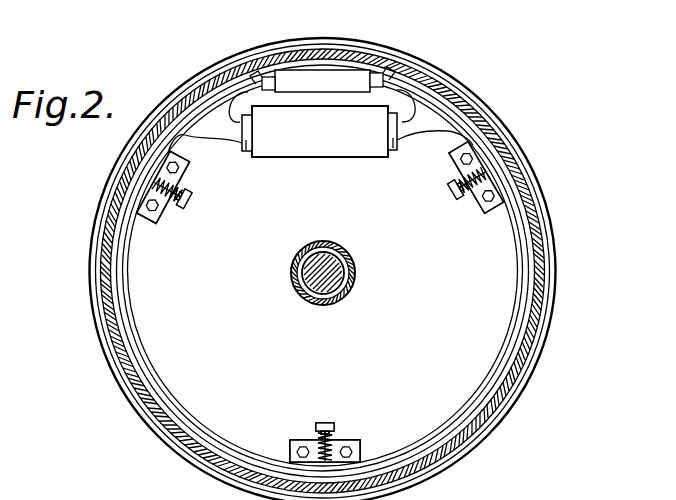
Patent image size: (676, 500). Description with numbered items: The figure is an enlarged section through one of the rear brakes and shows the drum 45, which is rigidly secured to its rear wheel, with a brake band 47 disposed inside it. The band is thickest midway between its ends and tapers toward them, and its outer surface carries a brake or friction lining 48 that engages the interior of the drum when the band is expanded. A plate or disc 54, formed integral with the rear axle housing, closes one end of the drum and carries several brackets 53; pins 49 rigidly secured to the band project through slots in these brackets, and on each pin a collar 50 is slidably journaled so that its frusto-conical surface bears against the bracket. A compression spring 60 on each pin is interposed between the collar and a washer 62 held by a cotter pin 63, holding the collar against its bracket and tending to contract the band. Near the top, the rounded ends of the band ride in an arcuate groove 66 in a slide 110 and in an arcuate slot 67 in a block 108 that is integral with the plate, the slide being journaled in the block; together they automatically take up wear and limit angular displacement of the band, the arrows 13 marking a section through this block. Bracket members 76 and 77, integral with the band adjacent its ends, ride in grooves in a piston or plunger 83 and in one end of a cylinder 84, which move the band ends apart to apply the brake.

The contact terminals 13 is at (256, 84).
The drum 45 is at (540, 278).
The brake band 47 is at (472, 407).
The brake or friction lining 48 is at (442, 441).
The pin 49 is at (196, 200).
The collar 50 is at (152, 180).
The bracket 53 is at (158, 224).
The plate or disc 54 is at (126, 393).
The compression spring 60 is at (166, 212).
The washer 62 is at (193, 188).
The cotter pin 63 is at (182, 206).
The arcuate groove 66 is at (276, 77).
The arcuate slot 67 is at (369, 74).
The bracket member 76 is at (226, 122).
The bracket member 77 is at (425, 120).
The piston or plunger 83 is at (249, 150).
The cylinder 84 is at (362, 146).
The block 108 is at (317, 80).
The slide 110 is at (275, 83).